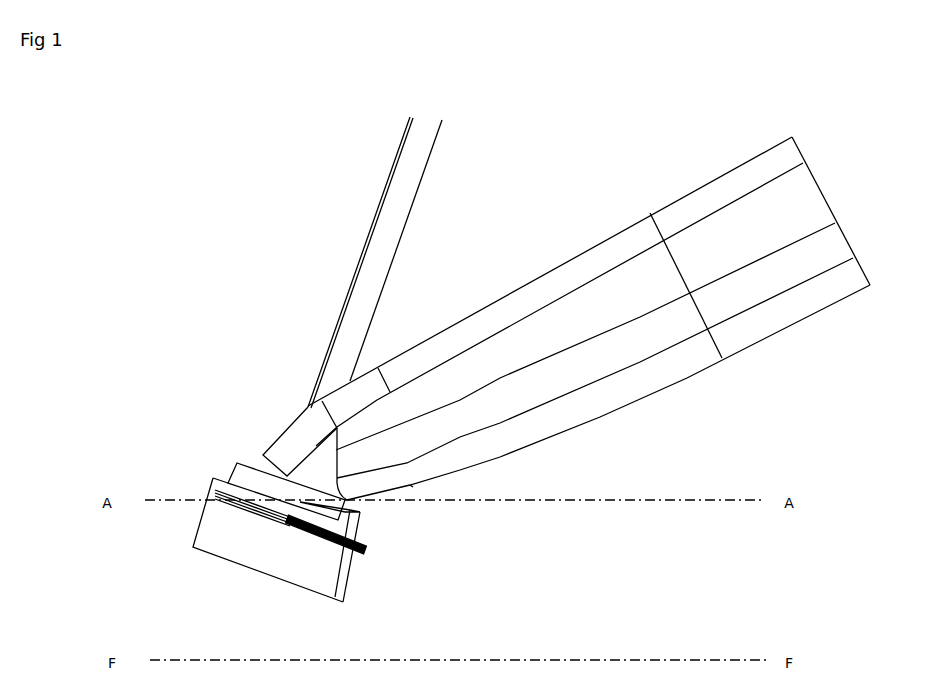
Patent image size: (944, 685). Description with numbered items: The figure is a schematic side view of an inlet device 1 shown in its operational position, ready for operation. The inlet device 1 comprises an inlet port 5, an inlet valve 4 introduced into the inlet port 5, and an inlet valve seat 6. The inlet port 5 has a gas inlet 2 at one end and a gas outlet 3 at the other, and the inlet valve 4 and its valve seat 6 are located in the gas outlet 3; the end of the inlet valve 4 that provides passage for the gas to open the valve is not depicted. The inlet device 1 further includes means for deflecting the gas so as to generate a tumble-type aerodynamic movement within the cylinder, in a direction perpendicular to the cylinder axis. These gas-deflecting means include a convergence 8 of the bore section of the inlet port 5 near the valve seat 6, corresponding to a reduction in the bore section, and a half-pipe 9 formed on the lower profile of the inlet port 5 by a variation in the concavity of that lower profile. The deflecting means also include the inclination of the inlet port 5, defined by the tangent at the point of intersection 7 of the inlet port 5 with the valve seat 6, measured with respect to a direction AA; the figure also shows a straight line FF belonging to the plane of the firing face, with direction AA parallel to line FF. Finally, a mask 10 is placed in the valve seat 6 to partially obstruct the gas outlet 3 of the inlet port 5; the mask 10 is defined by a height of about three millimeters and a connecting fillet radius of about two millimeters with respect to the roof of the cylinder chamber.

The inlet device 1 is at (275, 198).
The gas inlet 2 is at (735, 182).
The gas outlet 3 is at (192, 560).
The inlet valve 4 is at (347, 350).
The inlet port 5 is at (537, 300).
The inlet valve seat 6 is at (210, 497).
The point of intersection 7 is at (367, 510).
The convergence 8 is at (275, 433).
The half-pipe 9 is at (413, 487).
The mask 10 is at (365, 552).